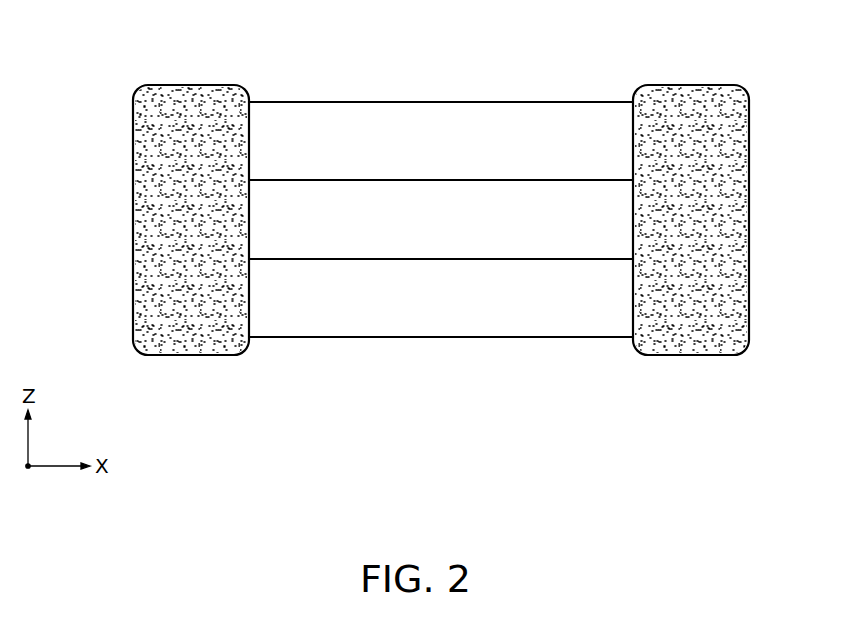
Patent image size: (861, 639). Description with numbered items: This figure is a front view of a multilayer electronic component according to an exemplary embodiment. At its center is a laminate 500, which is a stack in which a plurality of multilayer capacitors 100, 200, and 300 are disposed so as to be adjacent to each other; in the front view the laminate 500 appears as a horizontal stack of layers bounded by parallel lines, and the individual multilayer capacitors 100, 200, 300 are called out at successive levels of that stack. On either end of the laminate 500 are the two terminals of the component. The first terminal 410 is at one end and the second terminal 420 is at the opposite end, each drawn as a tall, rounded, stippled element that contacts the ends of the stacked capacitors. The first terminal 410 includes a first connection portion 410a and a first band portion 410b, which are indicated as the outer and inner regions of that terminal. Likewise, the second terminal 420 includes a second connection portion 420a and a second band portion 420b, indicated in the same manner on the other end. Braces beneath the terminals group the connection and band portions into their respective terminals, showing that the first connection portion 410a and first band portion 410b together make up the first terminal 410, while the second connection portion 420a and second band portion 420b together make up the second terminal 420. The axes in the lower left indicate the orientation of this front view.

The multilayer capacitor 100 is at (535, 108).
The multilayer capacitor 200 is at (475, 208).
The multilayer capacitor 300 is at (402, 282).
The first terminal 410 is at (207, 412).
The first connection portion 410a is at (133, 267).
The first band portion 410b is at (175, 338).
The second terminal 420 is at (775, 412).
The second connection portion 420a is at (749, 267).
The second band portion 420b is at (708, 338).
The laminate 500 is at (306, 92).